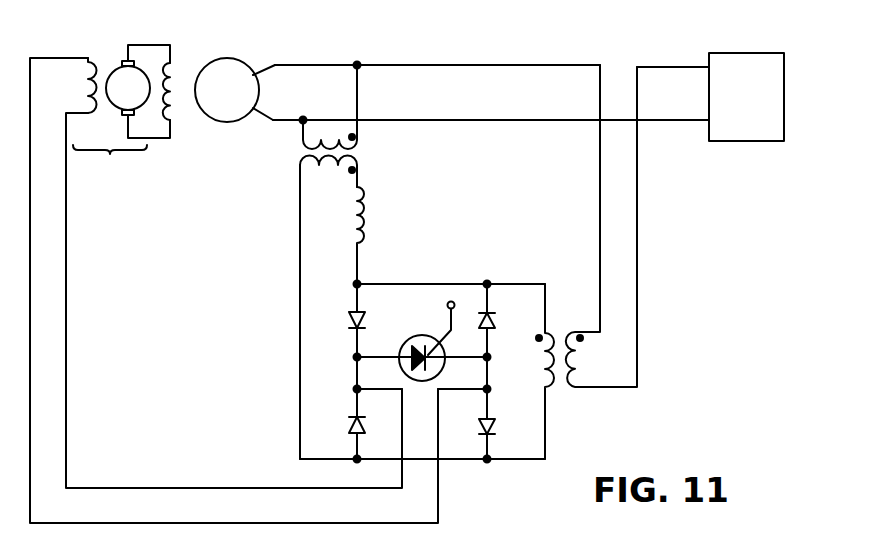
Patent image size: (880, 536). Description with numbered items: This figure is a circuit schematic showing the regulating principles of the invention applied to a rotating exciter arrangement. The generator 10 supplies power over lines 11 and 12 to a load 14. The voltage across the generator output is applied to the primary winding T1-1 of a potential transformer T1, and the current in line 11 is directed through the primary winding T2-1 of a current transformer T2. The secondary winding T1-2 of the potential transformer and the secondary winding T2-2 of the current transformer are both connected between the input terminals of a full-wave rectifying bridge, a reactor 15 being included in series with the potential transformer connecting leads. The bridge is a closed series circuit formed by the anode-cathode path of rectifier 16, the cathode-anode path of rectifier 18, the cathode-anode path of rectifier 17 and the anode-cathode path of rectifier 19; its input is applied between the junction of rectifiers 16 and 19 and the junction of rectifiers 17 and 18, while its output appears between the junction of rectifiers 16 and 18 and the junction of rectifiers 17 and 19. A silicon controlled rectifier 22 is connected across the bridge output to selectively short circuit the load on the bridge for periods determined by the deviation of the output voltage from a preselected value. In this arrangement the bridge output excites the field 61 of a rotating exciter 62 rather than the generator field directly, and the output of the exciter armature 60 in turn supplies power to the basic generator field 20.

The generator 10 is at (238, 61).
The line 11 is at (422, 65).
The line 12 is at (506, 121).
The load 14 is at (736, 53).
The reactor 15 is at (367, 223).
The rectifier 16 is at (348, 320).
The rectifier 17 is at (497, 427).
The rectifier 18 is at (348, 423).
The rectifier 19 is at (496, 318).
The field 20 is at (181, 70).
The silicon controlled rectifier 22 is at (405, 341).
The exciter armature 60 is at (110, 72).
The field 61 is at (86, 82).
The rotating exciter 62 is at (101, 219).
The potential transformer T1 is at (309, 261).
The primary winding of potential transformer T1-1 is at (303, 148).
The secondary winding of potential transformer T1-2 is at (305, 160).
The current transformer T2 is at (566, 262).
The primary winding of current transformer T2-1 is at (577, 369).
The secondary winding of current transformer T2-2 is at (548, 367).